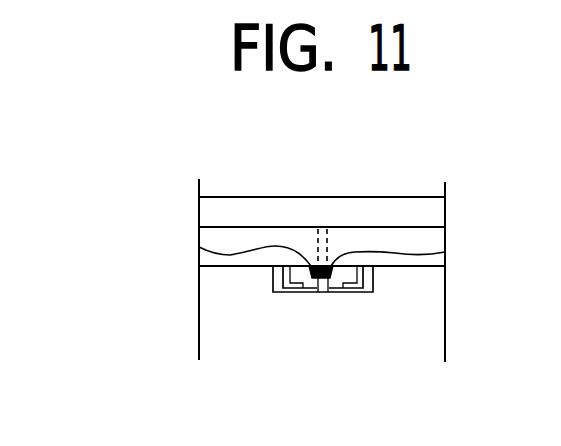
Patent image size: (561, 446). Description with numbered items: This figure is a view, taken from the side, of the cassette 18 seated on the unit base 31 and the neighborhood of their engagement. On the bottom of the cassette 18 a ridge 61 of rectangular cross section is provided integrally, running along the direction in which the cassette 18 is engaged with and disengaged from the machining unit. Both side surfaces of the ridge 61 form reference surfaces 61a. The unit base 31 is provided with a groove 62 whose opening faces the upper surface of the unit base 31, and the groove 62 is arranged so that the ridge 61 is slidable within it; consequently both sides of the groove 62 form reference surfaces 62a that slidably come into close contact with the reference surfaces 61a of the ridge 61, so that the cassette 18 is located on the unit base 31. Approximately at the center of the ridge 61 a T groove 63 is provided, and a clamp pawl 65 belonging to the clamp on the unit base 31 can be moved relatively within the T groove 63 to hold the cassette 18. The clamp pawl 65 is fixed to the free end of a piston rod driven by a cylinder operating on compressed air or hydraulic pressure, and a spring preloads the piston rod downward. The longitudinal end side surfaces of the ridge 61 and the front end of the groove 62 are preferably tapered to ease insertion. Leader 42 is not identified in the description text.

The cassette 18 is at (447, 204).
The unit base 31 is at (447, 312).
The screw 42 is at (322, 228).
The ridge 61 is at (307, 290).
The reference surfaces 61a is at (273, 282).
The groove 62 is at (347, 293).
The reference surfaces 62a is at (353, 292).
The T groove 63 is at (445, 252).
The clamp pawl 65 is at (199, 247).